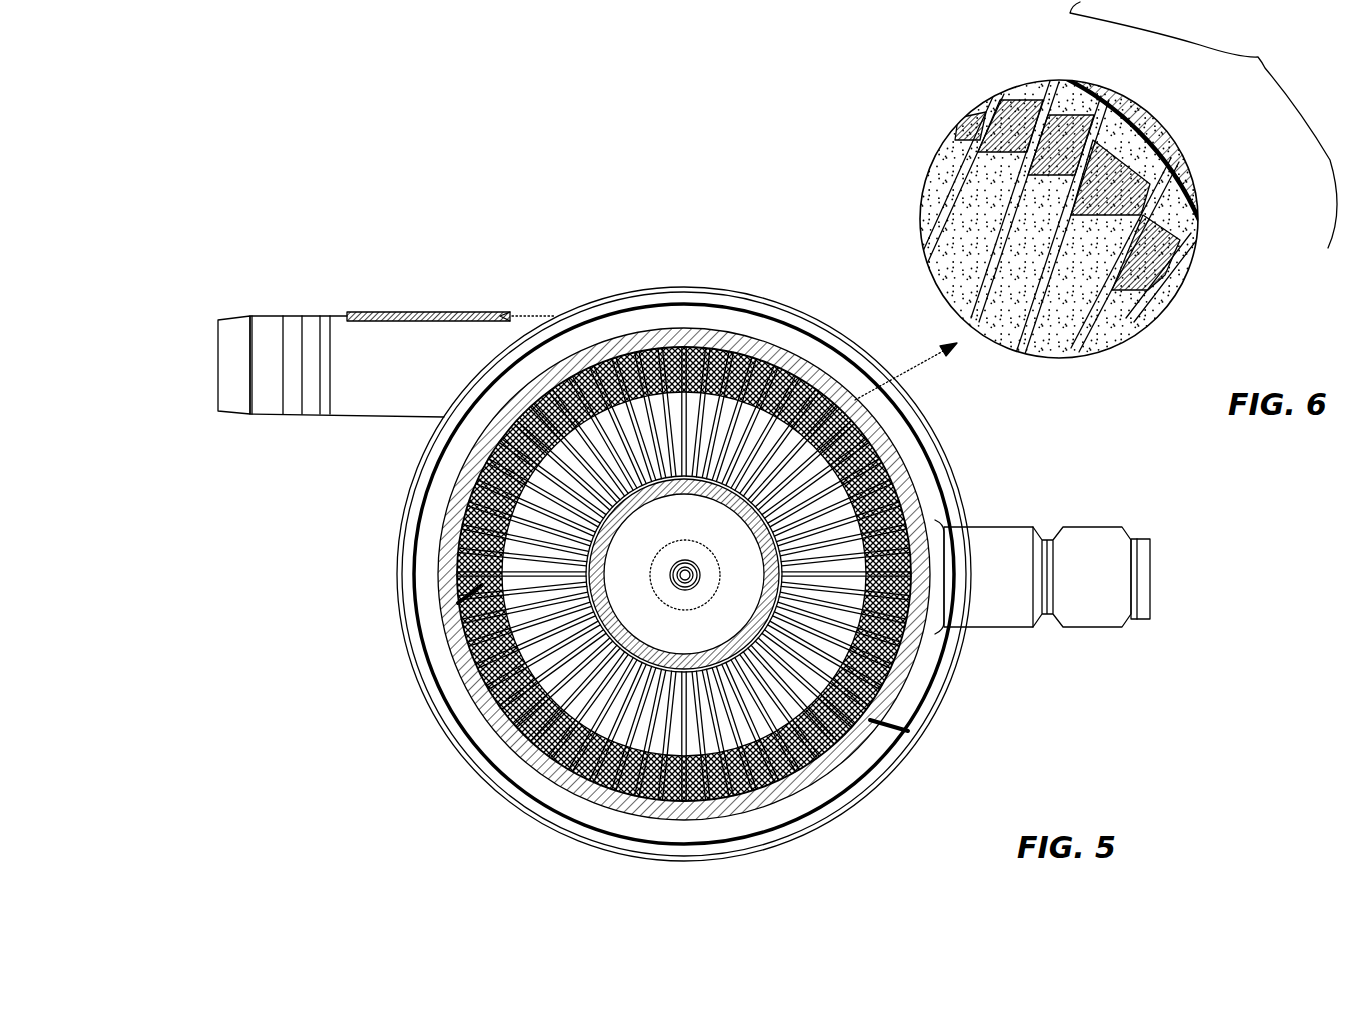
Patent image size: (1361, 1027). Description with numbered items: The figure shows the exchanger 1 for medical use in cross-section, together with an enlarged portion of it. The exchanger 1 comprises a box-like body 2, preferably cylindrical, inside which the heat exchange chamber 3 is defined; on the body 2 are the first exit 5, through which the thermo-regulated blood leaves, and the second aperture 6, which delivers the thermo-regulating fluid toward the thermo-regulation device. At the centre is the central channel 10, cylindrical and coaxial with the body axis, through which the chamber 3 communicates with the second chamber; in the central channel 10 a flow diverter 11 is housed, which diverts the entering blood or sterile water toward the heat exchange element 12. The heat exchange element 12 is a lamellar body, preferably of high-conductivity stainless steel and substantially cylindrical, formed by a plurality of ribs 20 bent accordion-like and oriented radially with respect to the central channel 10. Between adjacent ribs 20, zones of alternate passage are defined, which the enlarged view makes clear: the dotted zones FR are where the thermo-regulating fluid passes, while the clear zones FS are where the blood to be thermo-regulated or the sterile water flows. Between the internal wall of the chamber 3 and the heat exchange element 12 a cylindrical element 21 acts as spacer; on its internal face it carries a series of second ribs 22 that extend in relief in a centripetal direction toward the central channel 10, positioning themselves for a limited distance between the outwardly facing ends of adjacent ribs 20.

In FIG. 5, the exchanger 1 is at (514, 262).
In FIG. 5, the box-like body 2 is at (937, 440).
In FIG. 6, the box-like body 2 is at (971, 333).
In FIG. 5, the heat exchange chamber 3 is at (450, 556).
In FIG. 6, the heat exchange chamber 3 is at (1153, 113).
In FIG. 5, the first exit 5 is at (210, 355).
In FIG. 5, the second aperture 6 is at (1160, 575).
In FIG. 5, the central channel 10 is at (728, 532).
In FIG. 5, the flow diverter 11 is at (687, 575).
In FIG. 5, the heat exchange element 12 is at (927, 727).
In FIG. 6, the ribs 20 is at (943, 275).
In FIG. 5, the cylindrical element 21 is at (470, 700).
In FIG. 6, the second ribs 22 is at (1203, 253).
In FIG. 6, the zones where the thermo-regulating fluid passes FR is at (950, 230).
In FIG. 6, the clear zones FS is at (950, 233).